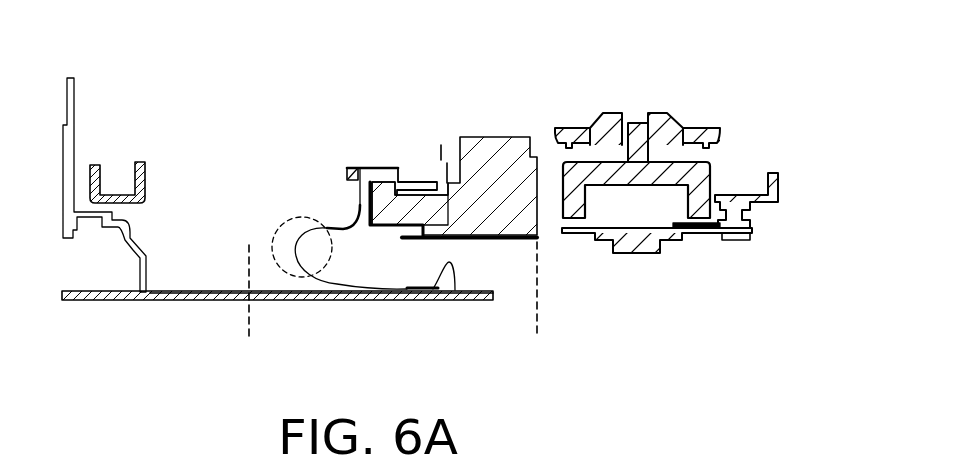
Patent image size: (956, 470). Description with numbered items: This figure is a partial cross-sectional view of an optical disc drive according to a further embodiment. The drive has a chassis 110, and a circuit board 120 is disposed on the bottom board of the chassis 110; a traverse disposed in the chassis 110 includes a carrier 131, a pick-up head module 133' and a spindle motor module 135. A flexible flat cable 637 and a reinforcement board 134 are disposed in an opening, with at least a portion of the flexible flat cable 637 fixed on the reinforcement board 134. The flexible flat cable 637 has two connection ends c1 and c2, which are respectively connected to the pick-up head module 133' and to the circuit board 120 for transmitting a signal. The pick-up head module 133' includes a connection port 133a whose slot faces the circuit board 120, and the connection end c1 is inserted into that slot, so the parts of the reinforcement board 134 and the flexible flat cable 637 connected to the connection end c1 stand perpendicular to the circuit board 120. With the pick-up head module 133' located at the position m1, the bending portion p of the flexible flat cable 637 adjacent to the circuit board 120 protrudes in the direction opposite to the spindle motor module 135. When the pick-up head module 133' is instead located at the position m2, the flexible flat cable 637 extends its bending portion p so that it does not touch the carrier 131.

The chassis 110 is at (73, 78).
The carrier 131 is at (100, 160).
The circuit board 120 is at (175, 301).
The flexible flat cable 637 is at (348, 224).
The reinforcement board 134 is at (358, 174).
The connection port 133a is at (393, 177).
The pick-up head module 133' is at (459, 148).
The connection end c1 is at (365, 168).
The connection end c2 is at (455, 290).
The position m1 is at (541, 306).
The position m2 is at (252, 307).
The bending portion p is at (278, 230).
The spindle motor module 135 is at (693, 91).